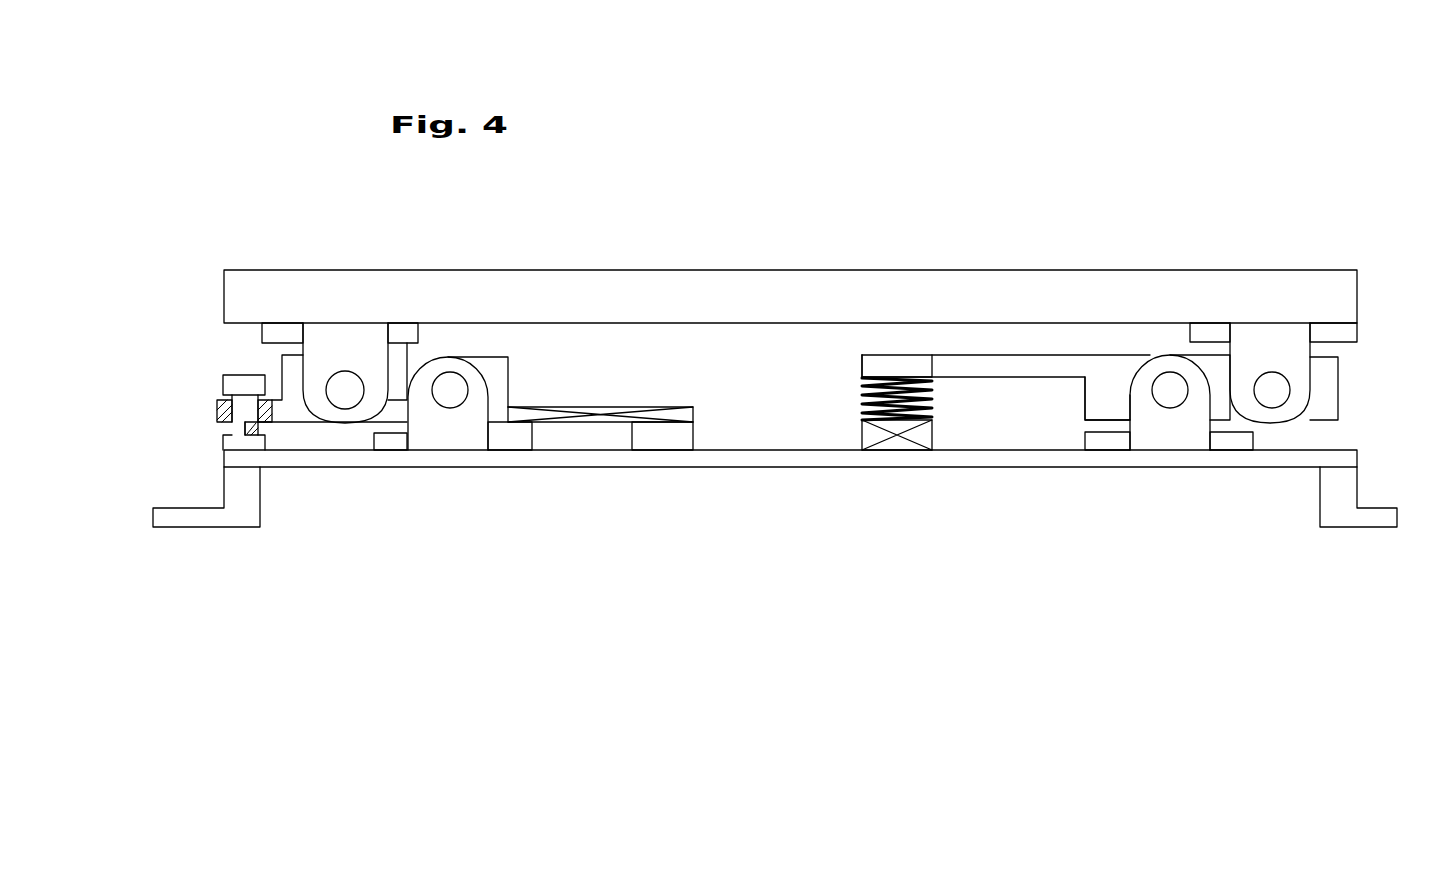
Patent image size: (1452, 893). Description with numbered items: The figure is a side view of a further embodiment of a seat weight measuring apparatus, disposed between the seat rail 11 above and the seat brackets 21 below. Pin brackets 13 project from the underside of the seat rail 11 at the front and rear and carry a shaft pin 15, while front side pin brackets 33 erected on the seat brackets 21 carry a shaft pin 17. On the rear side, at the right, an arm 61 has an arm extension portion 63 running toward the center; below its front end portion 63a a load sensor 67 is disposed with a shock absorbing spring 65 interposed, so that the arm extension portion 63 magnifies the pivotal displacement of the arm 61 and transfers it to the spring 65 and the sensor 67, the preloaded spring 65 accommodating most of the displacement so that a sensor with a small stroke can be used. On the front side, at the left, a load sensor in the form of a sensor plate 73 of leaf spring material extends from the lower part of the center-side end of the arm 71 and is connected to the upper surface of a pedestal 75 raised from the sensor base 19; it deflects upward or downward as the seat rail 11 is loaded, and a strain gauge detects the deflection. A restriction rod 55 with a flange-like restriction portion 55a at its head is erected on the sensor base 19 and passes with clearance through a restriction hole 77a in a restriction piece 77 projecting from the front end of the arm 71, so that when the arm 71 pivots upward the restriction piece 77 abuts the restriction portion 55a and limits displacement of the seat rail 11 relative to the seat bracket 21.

The seat rail 11 is at (505, 297).
The pin bracket 13 is at (315, 352).
The shaft pin 15 is at (348, 403).
The shaft pin 17 is at (452, 393).
The sensor base 19 is at (757, 460).
The seat bracket 21 is at (237, 492).
The front side pin bracket 33 is at (428, 422).
The restriction rod 55 is at (247, 403).
The restriction portion 55a is at (235, 385).
The arm 61 is at (1112, 393).
The arm extension portion 63 is at (1032, 363).
The front end portion 63a is at (880, 368).
The shock absorbing spring 65 is at (932, 392).
The load sensor 67 is at (920, 437).
The arm 71 is at (395, 368).
The load sensor 73 is at (555, 412).
The pedestal 75 is at (697, 435).
The restriction piece 77 is at (247, 405).
The restriction hole 77a is at (243, 423).